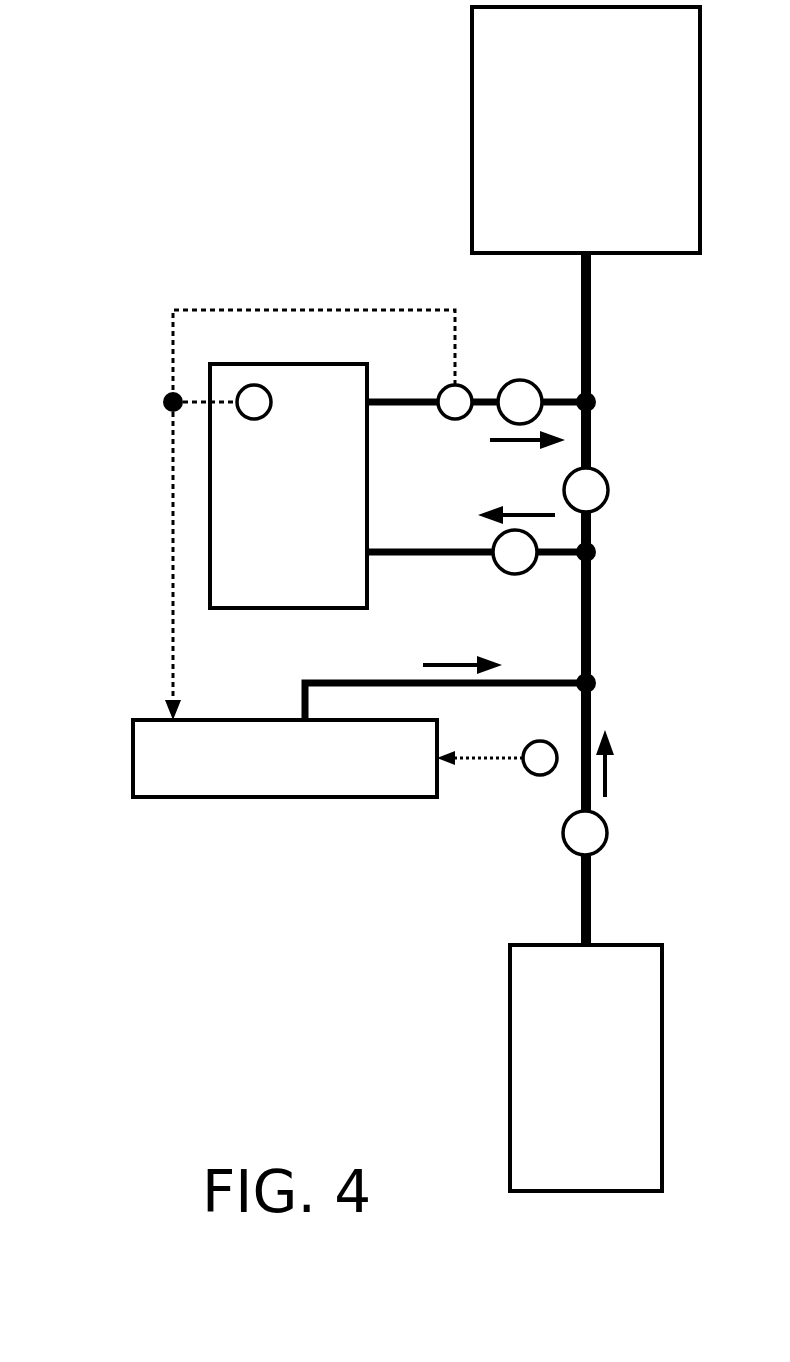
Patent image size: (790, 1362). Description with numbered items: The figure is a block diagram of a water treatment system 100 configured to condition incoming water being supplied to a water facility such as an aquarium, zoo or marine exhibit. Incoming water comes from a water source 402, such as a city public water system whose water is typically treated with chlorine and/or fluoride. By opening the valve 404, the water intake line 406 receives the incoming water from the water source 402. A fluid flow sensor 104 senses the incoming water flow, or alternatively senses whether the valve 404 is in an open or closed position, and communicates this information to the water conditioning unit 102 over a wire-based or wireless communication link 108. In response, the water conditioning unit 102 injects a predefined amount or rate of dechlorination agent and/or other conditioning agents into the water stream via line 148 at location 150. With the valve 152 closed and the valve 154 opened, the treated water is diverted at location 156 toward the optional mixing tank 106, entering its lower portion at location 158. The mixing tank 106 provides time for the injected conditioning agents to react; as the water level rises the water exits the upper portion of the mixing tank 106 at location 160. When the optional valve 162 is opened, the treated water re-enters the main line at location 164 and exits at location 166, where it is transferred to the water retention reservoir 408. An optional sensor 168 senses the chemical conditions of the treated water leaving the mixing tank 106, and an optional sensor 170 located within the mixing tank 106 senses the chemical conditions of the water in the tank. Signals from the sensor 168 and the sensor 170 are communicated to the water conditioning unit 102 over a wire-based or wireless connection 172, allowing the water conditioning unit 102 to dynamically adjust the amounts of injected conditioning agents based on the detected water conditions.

The water treatment system 100 is at (100, 325).
The water conditioning unit 102 is at (418, 788).
The fluid flow sensor 104 is at (535, 775).
The mixing tank 106 is at (347, 600).
The communication link 108 is at (483, 758).
The line 148 is at (354, 683).
The injection location 150 is at (622, 684).
The valve 152 is at (608, 490).
The valve 154 is at (515, 574).
The diversion location 156 is at (622, 554).
The mixing tank inlet location 158 is at (384, 568).
The mixing tank outlet location 160 is at (385, 387).
The valve 162 is at (520, 380).
The re-entry location 164 is at (622, 404).
The exit location 166 is at (622, 309).
The sensor 168 is at (455, 419).
The sensor 170 is at (271, 402).
The connection 172 is at (173, 515).
The water source 402 is at (643, 1183).
The valve 404 is at (608, 833).
The water intake line 406 is at (609, 887).
The water retention reservoir 408 is at (680, 245).